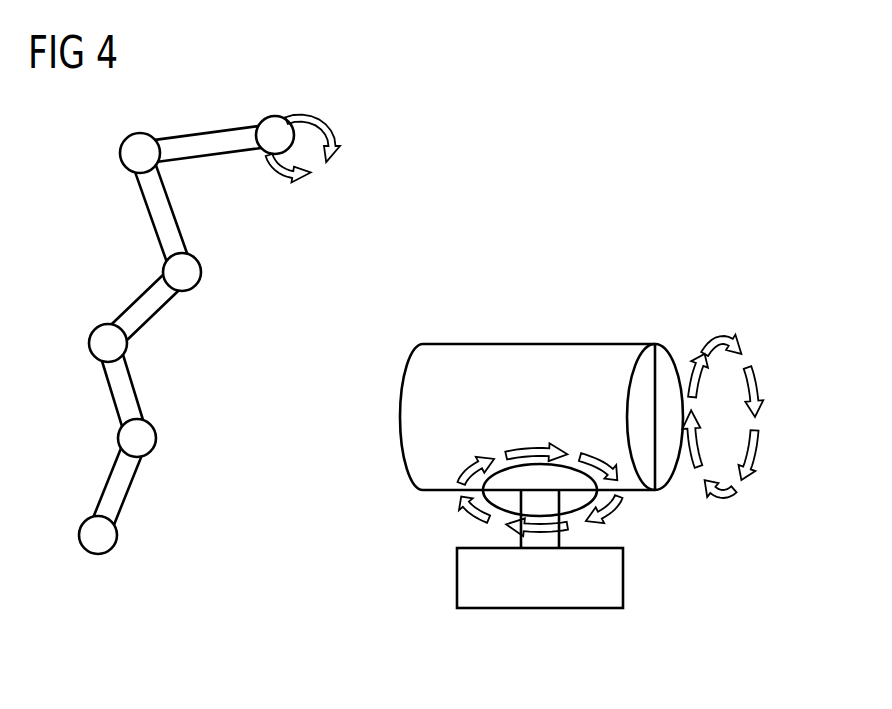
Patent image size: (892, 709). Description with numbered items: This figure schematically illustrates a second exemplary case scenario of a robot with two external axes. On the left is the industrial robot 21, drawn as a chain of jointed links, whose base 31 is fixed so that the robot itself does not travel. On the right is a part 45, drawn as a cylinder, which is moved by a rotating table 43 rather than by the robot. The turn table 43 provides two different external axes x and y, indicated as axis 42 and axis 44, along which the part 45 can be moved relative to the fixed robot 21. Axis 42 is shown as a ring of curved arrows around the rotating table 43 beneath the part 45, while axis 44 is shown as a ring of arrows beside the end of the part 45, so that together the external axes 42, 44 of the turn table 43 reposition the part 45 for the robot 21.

The industrial robot 21 is at (84, 266).
The base 31 is at (97, 545).
The part 45 is at (520, 352).
The external axis 44 is at (755, 380).
The external axis 42 is at (452, 497).
The rotating table 43 is at (560, 547).